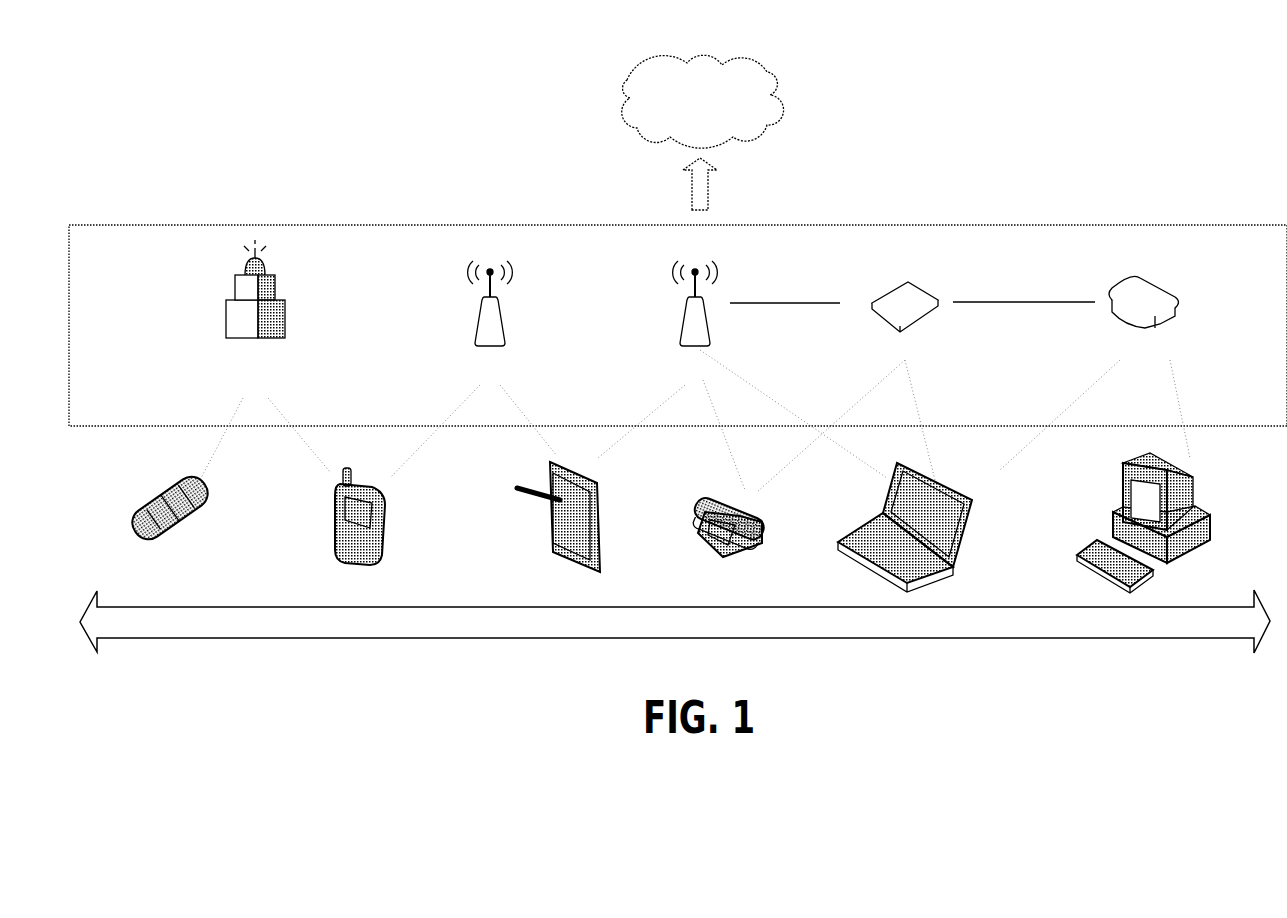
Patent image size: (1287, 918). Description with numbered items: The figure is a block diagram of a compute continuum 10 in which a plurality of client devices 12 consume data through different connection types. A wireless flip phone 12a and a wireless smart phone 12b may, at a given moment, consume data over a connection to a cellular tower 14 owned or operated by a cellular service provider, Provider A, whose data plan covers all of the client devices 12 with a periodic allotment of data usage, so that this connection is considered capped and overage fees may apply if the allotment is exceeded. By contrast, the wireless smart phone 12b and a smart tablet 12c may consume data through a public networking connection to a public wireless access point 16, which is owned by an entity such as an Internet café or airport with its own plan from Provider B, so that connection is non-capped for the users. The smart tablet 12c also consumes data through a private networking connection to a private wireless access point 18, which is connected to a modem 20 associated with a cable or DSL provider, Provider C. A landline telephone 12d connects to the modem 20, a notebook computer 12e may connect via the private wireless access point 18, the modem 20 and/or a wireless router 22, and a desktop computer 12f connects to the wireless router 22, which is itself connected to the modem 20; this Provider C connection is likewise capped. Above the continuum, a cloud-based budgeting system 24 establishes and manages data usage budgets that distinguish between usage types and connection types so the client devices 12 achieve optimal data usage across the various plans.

The compute continuum 10 is at (362, 60).
The client devices 12 is at (100, 543).
The wireless flip phone 12a is at (200, 513).
The wireless smart phone 12b is at (385, 545).
The smart tablet 12c is at (600, 527).
The landline telephone 12d is at (762, 537).
The notebook computer 12e is at (965, 547).
The desktop computer 12f is at (1212, 527).
The cellular tower 14 is at (150, 303).
The public wireless access point 16 is at (442, 320).
The private wireless access point 18 is at (657, 320).
The modem 20 is at (888, 276).
The wireless router 22 is at (1112, 265).
The cloud-based budgeting system 24 is at (703, 101).